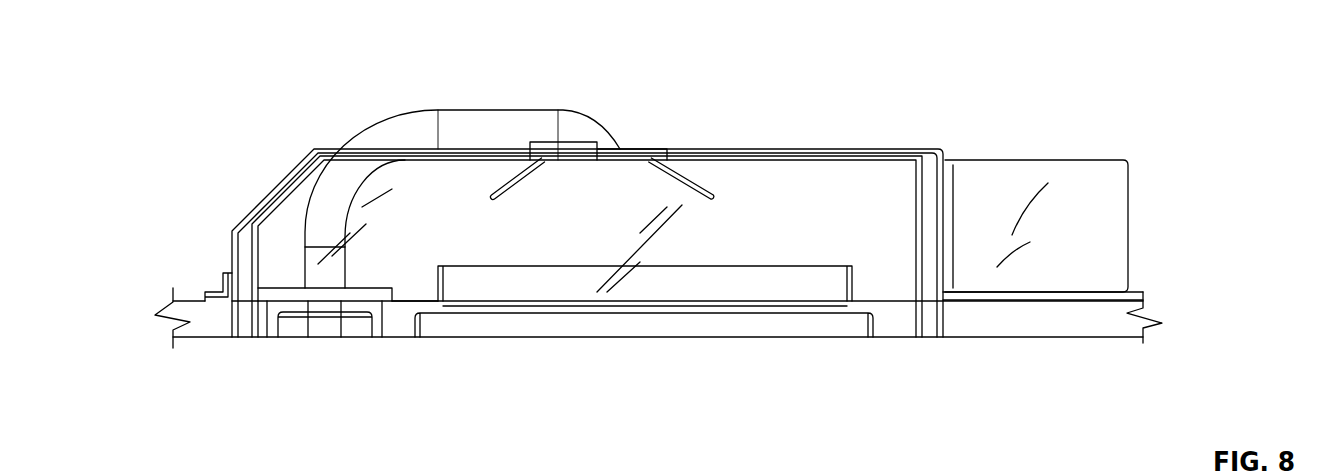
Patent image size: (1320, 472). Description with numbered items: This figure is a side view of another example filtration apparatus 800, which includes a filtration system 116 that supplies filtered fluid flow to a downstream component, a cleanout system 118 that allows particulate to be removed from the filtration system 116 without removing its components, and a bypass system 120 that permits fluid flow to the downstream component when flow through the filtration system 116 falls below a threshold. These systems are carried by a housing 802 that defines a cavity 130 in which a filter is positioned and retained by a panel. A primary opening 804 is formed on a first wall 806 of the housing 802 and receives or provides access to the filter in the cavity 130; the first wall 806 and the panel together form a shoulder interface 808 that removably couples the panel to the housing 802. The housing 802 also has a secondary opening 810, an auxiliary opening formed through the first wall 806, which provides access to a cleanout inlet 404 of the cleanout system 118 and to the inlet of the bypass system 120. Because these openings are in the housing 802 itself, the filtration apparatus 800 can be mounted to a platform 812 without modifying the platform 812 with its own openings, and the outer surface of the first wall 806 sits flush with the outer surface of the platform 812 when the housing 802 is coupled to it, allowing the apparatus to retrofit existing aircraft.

The filtration apparatus 800 is at (232, 82).
The cleanout system 118 is at (443, 95).
The filtration system 116 is at (728, 255).
The cavity 130 is at (832, 209).
The housing 802 is at (285, 202).
The platform 812 is at (223, 283).
The bypass system 120 is at (276, 278).
The shoulder interface 808 is at (420, 300).
The primary opening 804 is at (848, 308).
The first wall 806 is at (888, 337).
The secondary opening 810 is at (275, 338).
The cleanout inlet 404 is at (323, 330).